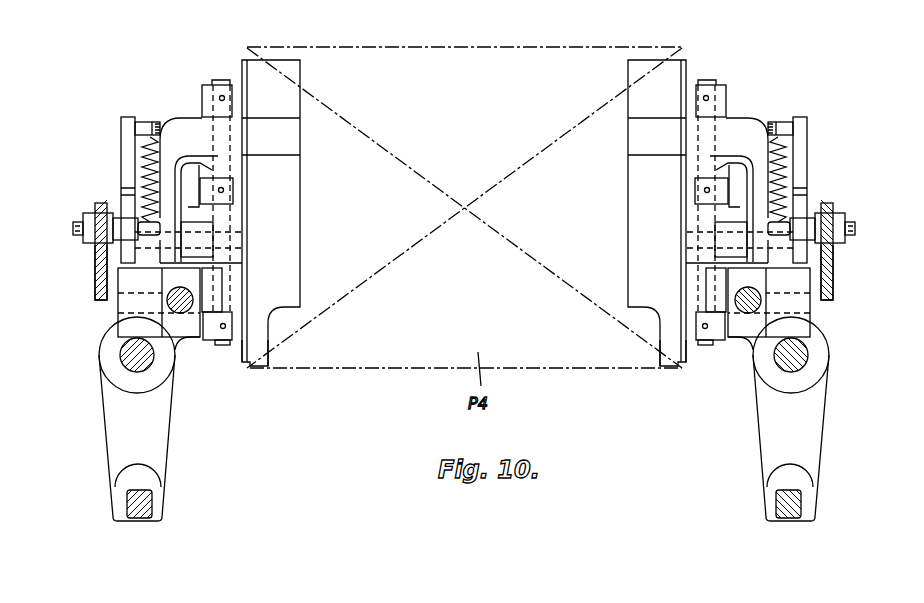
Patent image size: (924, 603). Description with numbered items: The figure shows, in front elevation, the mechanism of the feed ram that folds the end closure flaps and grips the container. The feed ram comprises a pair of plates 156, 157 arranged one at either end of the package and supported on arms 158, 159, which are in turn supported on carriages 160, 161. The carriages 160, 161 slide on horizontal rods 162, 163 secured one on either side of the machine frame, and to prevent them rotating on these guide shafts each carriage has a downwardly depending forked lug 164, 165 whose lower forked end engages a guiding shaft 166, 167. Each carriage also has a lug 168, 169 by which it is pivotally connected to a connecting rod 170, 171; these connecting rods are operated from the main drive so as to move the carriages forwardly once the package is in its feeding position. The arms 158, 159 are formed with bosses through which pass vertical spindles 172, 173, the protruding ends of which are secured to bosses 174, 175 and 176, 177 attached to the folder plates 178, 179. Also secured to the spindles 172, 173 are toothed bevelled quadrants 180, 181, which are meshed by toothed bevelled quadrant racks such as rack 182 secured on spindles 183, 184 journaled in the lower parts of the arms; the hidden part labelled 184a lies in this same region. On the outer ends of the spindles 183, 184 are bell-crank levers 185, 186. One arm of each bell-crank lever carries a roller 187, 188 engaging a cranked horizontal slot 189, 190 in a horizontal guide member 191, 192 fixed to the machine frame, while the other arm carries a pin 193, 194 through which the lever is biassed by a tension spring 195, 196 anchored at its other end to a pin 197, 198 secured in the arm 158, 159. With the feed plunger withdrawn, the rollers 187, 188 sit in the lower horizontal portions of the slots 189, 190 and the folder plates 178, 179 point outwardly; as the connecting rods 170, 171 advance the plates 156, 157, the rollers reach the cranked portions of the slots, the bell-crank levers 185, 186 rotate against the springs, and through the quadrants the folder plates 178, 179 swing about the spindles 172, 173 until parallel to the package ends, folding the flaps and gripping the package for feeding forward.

The plate 156 is at (632, 163).
The plate 157 is at (290, 184).
The arm 158 is at (738, 122).
The arm 159 is at (177, 128).
The carriage 160 is at (813, 340).
The carriage 161 is at (125, 385).
The horizontal rod 162 is at (809, 353).
The horizontal rod 163 is at (123, 363).
The forked lug 164 is at (817, 402).
The forked lug 165 is at (119, 447).
The guiding shaft 166 is at (807, 497).
The guiding shaft 167 is at (130, 500).
The lug 168 is at (813, 284).
The lug 169 is at (118, 293).
The connecting rod 170 is at (749, 310).
The connecting rod 171 is at (178, 308).
The vertical spindle 172 is at (692, 242).
The vertical spindle 173 is at (222, 232).
The boss 174 is at (717, 85).
The boss 175 is at (697, 345).
The boss 176 is at (205, 85).
The boss 177 is at (233, 337).
The folder plate 178 is at (673, 367).
The folder plate 179 is at (242, 345).
The toothed bevelled quadrant 180 is at (720, 168).
The toothed bevelled quadrant 181 is at (197, 170).
The toothed bevelled quadrant rack 182 is at (747, 223).
The spindle 183 is at (187, 210).
The spindle 184 is at (706, 265).
The left hidden block 184a is at (222, 270).
The bell-crank lever 185 is at (802, 146).
The bell-crank lever 186 is at (126, 162).
The roller 187 is at (838, 220).
The roller 188 is at (92, 222).
The cranked horizontal slot 189 is at (838, 250).
The cranked horizontal slot 190 is at (95, 252).
The horizontal guide member 191 is at (835, 268).
The horizontal guide member 192 is at (95, 283).
The pin 193 is at (780, 123).
The pin 194 is at (138, 125).
The tension spring 195 is at (780, 140).
The tension spring 196 is at (148, 153).
The pin 197 is at (790, 225).
The pin 198 is at (133, 230).